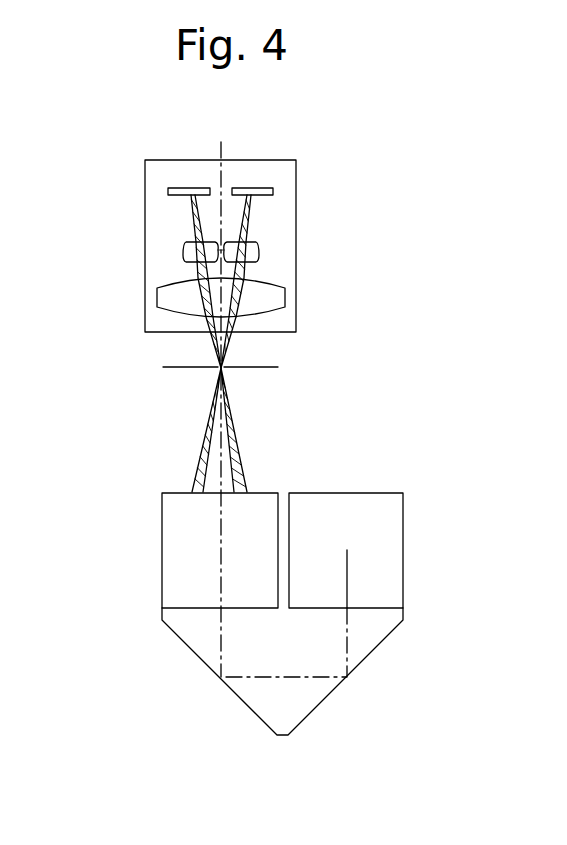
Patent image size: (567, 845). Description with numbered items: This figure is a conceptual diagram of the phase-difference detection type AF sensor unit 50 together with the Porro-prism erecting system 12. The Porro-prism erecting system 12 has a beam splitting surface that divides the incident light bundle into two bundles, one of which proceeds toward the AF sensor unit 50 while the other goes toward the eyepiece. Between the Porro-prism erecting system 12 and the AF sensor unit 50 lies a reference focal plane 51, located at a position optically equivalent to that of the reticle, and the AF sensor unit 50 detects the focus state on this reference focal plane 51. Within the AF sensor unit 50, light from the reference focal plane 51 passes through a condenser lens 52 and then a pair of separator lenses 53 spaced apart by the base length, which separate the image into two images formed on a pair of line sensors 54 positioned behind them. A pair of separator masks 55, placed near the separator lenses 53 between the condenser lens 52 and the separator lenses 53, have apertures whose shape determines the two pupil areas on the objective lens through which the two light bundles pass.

The Porro-prism erecting system 12 is at (458, 608).
The AF sensor unit 50 is at (320, 183).
The reference focal plane 51 is at (258, 368).
The condenser lens 52 is at (273, 300).
The separator lenses 53 is at (183, 252).
The line sensors 54 is at (195, 188).
The separator masks 55 is at (193, 268).